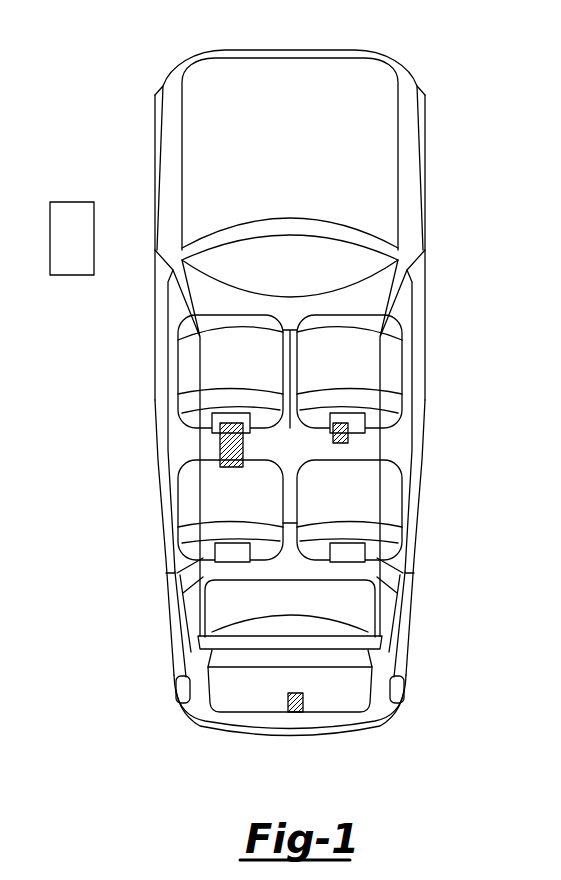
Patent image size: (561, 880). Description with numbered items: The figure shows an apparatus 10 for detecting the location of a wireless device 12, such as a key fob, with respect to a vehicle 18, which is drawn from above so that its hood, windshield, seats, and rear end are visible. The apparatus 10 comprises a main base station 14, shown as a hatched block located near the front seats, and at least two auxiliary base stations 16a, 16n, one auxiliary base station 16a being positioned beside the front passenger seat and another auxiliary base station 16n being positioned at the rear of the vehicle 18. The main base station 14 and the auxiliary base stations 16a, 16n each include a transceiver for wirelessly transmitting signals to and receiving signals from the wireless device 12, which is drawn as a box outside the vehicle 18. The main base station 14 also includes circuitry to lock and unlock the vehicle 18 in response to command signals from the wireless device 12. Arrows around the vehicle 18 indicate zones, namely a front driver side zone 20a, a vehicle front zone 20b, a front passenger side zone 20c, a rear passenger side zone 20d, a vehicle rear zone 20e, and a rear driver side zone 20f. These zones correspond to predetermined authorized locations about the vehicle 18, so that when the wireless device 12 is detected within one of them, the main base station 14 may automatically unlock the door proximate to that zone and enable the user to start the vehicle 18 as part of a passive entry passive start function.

The apparatus 10 is at (123, 38).
The wireless device 12 is at (71, 202).
The main base station 14 is at (220, 442).
The auxiliary base station 16a is at (348, 436).
The auxiliary base station 16n is at (303, 704).
The vehicle 18 is at (426, 217).
The front driver side zone 20a is at (84, 105).
The vehicle front zone 20b is at (291, 30).
The front passenger side zone 20c is at (445, 143).
The rear passenger side zone 20d is at (440, 588).
The vehicle rear zone 20e is at (332, 752).
The rear driver side zone 20f is at (138, 587).